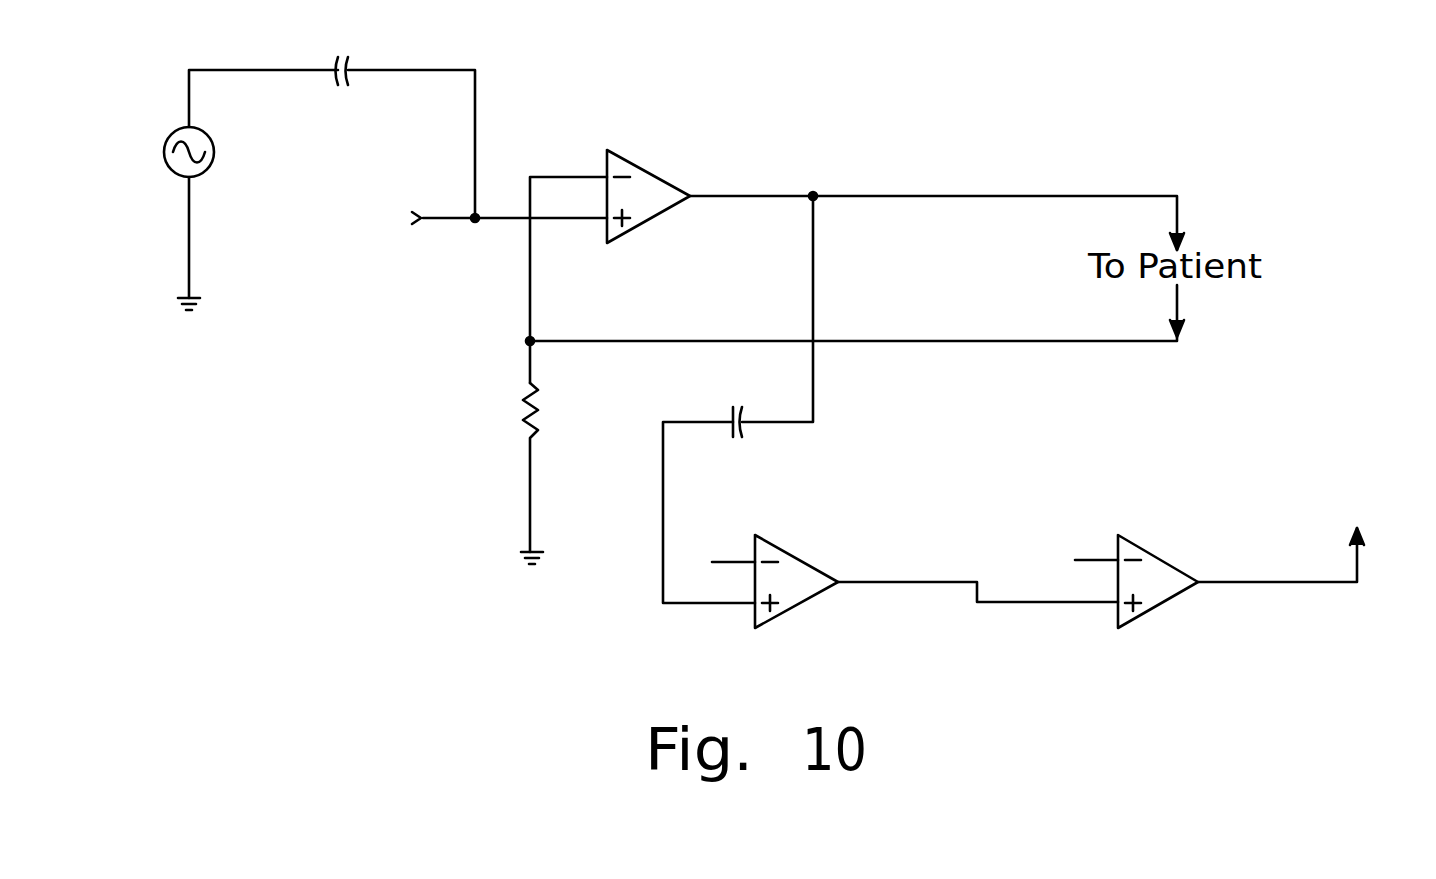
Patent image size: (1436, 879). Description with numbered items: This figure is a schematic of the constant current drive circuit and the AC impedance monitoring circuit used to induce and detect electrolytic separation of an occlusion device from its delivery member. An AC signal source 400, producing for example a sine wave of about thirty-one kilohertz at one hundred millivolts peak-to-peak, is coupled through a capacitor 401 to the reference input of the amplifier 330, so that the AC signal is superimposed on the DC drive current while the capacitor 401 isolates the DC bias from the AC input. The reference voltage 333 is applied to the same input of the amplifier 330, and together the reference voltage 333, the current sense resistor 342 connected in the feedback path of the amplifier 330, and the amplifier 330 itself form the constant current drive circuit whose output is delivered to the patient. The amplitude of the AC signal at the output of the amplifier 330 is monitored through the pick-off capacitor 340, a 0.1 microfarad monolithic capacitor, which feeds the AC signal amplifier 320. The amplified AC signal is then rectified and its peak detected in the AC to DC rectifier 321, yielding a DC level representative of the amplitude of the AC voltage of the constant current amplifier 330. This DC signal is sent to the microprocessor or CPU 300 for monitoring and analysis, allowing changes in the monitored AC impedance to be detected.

The AC signal source 400 is at (165, 152).
The capacitor 401 is at (350, 62).
The reference voltage 333 is at (325, 224).
The amplifier 330 is at (655, 176).
The current sense resistor 342 is at (522, 412).
The pick-off capacitor 340 is at (748, 434).
The AC signal amplifier 320 is at (800, 556).
The AC to DC rectifier 321 is at (1160, 556).
The microprocessor (CPU) 300 is at (1354, 485).